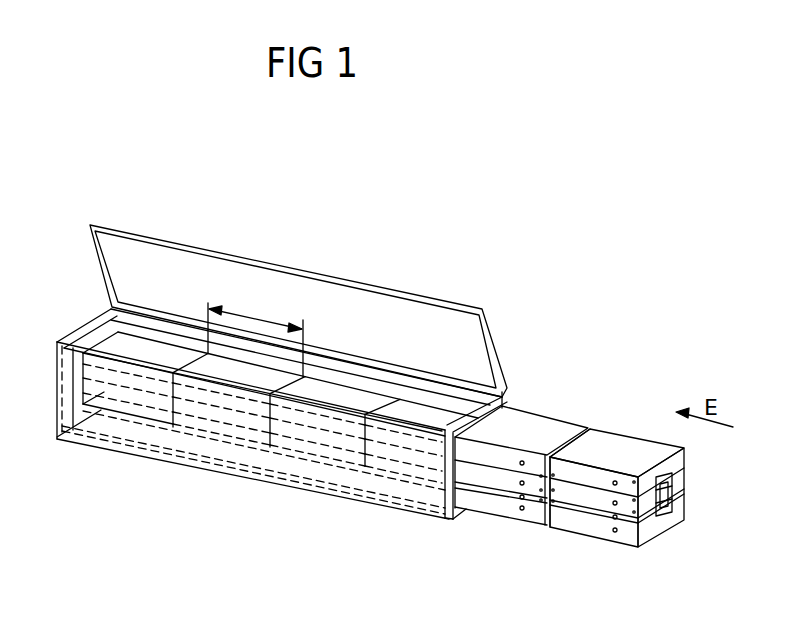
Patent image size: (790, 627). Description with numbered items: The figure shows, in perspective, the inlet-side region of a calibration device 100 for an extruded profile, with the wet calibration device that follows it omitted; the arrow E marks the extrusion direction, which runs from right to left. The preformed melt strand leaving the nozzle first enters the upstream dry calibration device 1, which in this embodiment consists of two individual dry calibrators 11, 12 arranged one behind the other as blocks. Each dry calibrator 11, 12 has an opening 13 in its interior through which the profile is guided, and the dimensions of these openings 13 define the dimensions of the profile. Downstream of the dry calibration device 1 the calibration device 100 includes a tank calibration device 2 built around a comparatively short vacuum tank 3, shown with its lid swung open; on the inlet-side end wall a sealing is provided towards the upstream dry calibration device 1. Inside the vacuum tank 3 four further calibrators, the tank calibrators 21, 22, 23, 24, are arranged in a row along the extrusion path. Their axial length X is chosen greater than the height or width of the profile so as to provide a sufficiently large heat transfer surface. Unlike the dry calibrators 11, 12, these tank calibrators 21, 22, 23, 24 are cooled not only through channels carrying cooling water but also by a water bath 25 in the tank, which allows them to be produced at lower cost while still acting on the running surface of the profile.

The calibration device 100 is at (300, 396).
The dry calibration device 1 is at (596, 484).
The tank calibration device 2 is at (88, 314).
The vacuum tank 3 is at (73, 430).
The dry calibrator 11 is at (620, 450).
The dry calibrator 12 is at (533, 428).
The opening 13 is at (660, 500).
The tank calibrator 21 is at (388, 450).
The tank calibrator 22 is at (308, 432).
The tank calibrator 23 is at (210, 407).
The tank calibrator 24 is at (150, 398).
The water bath 25 is at (245, 457).